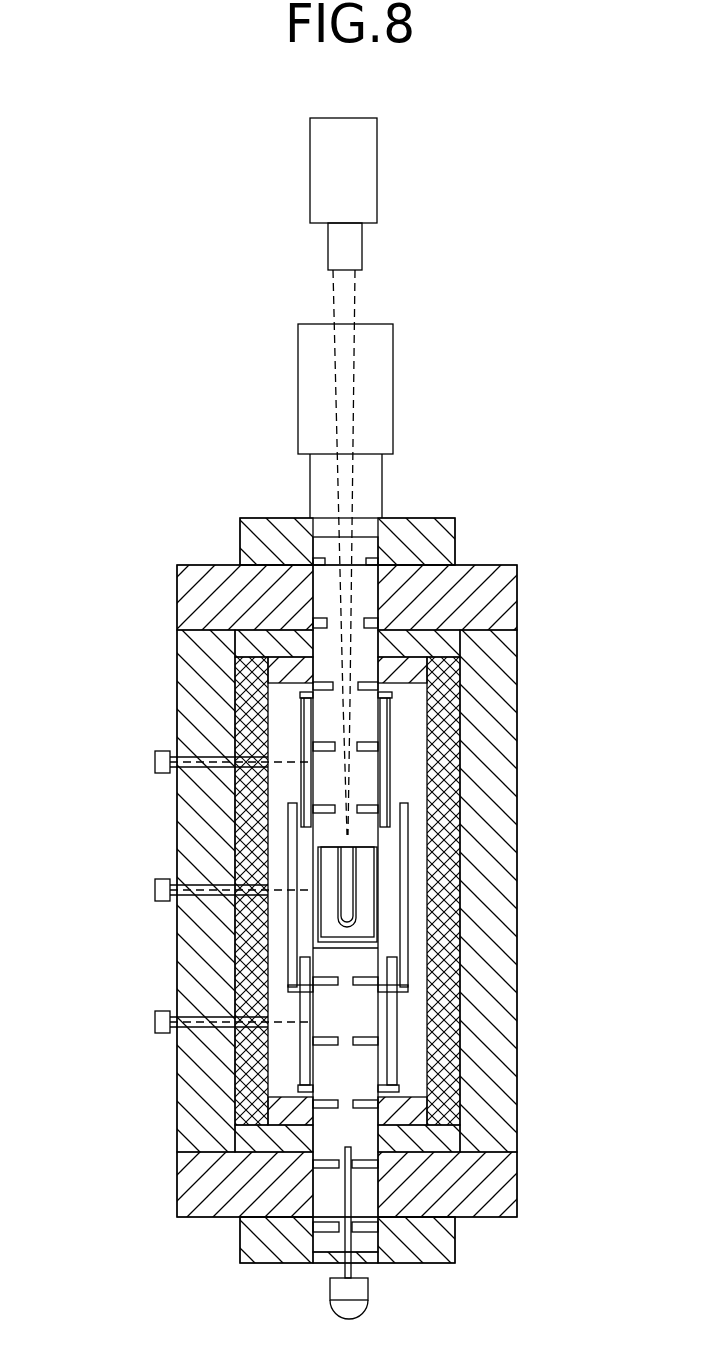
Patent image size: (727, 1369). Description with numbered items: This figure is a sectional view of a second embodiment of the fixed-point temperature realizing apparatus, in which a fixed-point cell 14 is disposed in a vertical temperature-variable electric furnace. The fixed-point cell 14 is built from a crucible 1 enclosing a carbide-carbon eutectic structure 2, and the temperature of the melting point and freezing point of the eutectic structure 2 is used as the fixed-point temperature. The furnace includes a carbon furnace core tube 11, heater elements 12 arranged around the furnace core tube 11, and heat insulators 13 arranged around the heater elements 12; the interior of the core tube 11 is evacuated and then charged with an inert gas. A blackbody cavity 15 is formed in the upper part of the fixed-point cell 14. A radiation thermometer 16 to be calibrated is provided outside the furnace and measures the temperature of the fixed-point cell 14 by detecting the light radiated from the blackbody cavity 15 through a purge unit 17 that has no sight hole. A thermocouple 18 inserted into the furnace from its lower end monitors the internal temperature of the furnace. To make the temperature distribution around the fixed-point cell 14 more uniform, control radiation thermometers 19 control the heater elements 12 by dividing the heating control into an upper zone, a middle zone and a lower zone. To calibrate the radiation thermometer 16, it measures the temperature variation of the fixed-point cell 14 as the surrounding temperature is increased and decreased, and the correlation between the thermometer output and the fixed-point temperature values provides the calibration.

The crucible 1 is at (377, 910).
The carbide-carbon eutectic structure 2 is at (363, 862).
The carbon furnace core tube 11 is at (308, 1203).
The heater elements 12 is at (395, 1037).
The heat insulators 13 is at (447, 708).
The fixed-point cell 14 is at (310, 866).
The blackbody cavity 15 is at (347, 885).
The radiation thermometer 16 is at (325, 180).
The purge unit 17 is at (384, 415).
The thermocouple 18 is at (360, 1295).
The control radiation thermometers 19 is at (155, 762).